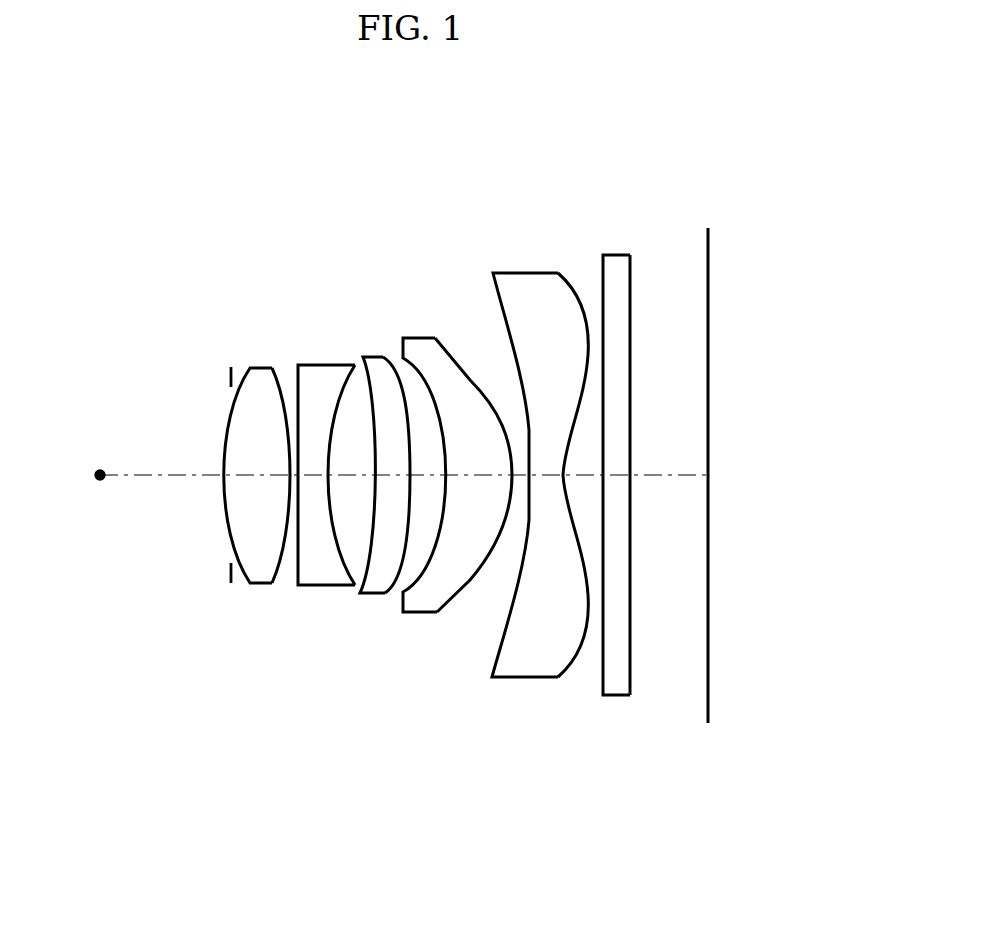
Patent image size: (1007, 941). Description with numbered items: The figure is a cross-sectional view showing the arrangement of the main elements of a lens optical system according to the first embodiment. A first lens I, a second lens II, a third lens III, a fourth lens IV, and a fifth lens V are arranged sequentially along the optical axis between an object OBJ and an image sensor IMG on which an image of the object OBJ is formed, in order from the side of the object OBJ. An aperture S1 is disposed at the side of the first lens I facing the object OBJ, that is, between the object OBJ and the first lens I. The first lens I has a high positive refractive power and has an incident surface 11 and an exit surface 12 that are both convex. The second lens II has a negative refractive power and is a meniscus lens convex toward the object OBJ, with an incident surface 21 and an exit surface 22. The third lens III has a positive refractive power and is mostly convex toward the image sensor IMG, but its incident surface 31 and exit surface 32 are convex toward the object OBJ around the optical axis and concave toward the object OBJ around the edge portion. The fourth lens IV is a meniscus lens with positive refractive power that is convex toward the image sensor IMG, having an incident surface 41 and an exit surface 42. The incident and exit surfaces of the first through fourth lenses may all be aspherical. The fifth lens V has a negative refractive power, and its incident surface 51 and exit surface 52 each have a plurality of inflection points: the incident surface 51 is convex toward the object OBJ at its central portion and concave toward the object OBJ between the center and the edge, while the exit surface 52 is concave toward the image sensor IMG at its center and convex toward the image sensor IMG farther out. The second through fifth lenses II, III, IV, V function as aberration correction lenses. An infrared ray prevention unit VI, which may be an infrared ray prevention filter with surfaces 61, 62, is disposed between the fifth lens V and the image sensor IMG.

The object OBJ is at (100, 473).
The aperture S1 is at (229, 377).
The first lens I is at (249, 487).
The incident surface of the first lens 11 is at (245, 386).
The exit surface of the first lens 12 is at (287, 386).
The second lens II is at (316, 465).
The incident surface of the second lens 21 is at (298, 377).
The exit surface of the second lens 22 is at (343, 377).
The third lens III is at (376, 478).
The incident surface of the third lens 31 is at (369, 375).
The exit surface of the third lens 32 is at (384, 360).
The fourth lens IV is at (453, 478).
The incident surface of the fourth lens 41 is at (421, 352).
The exit surface of the fourth lens 42 is at (454, 362).
The fifth lens V is at (525, 486).
The incident surface of the fifth lens 51 is at (496, 296).
The exit surface of the fifth lens 52 is at (569, 280).
The infrared ray prevention unit VI is at (617, 491).
The incident surface of the infrared ray prevention unit 61 is at (603, 277).
The exit surface of the infrared ray prevention unit 62 is at (631, 279).
The image sensor IMG is at (706, 254).